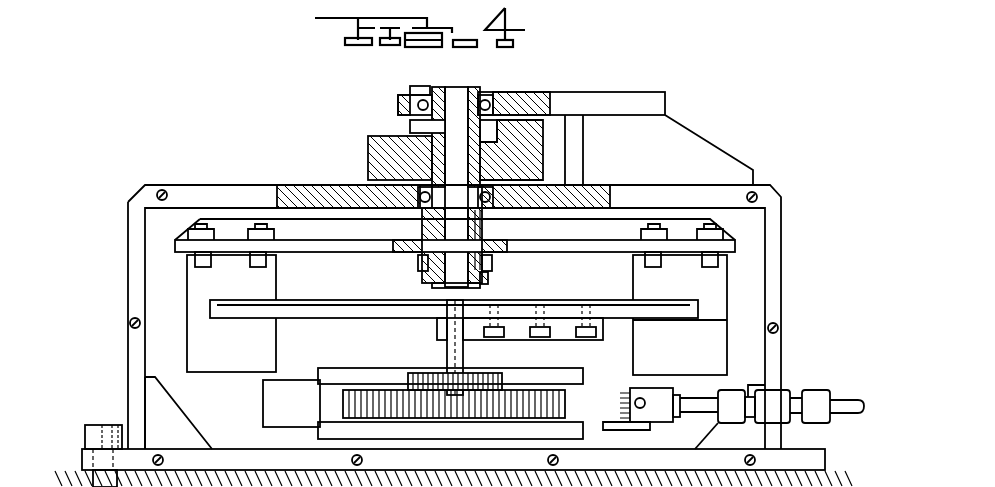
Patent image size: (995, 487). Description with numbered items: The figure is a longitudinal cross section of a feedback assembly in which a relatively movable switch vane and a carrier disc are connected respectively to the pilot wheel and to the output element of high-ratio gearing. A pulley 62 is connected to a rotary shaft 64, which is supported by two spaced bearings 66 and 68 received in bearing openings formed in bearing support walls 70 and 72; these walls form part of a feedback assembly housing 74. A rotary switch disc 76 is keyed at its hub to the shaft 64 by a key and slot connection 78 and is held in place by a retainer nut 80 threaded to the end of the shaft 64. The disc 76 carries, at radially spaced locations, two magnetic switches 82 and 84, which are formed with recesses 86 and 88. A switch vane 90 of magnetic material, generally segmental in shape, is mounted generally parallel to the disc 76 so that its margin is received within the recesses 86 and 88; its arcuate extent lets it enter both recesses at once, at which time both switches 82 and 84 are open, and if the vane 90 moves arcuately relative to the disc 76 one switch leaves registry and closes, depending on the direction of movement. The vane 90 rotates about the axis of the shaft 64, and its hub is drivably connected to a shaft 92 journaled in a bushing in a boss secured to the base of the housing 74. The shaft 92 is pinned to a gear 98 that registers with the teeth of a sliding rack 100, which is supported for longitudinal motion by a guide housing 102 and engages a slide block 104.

The pulley 62 is at (527, 170).
The rotary shaft 64 is at (477, 142).
The bearing 66 is at (425, 96).
The bearing 68 is at (493, 214).
The bearing support wall 70 is at (383, 199).
The bearing support wall 72 is at (535, 100).
The feedback assembly housing 74 is at (138, 255).
The rotary switch disc 76 is at (596, 230).
The key and slot connection 78 is at (489, 263).
The retainer nut 80 is at (488, 279).
The magnetic switch 82 is at (712, 331).
The magnetic switch 84 is at (243, 358).
The recess 86 is at (680, 341).
The recess 88 is at (265, 307).
The switch vane 90 is at (627, 320).
The shaft 92 is at (447, 350).
The gear 98 is at (422, 416).
The sliding rack 100 is at (343, 402).
The guide housing 102 is at (492, 429).
The slide block 104 is at (603, 430).